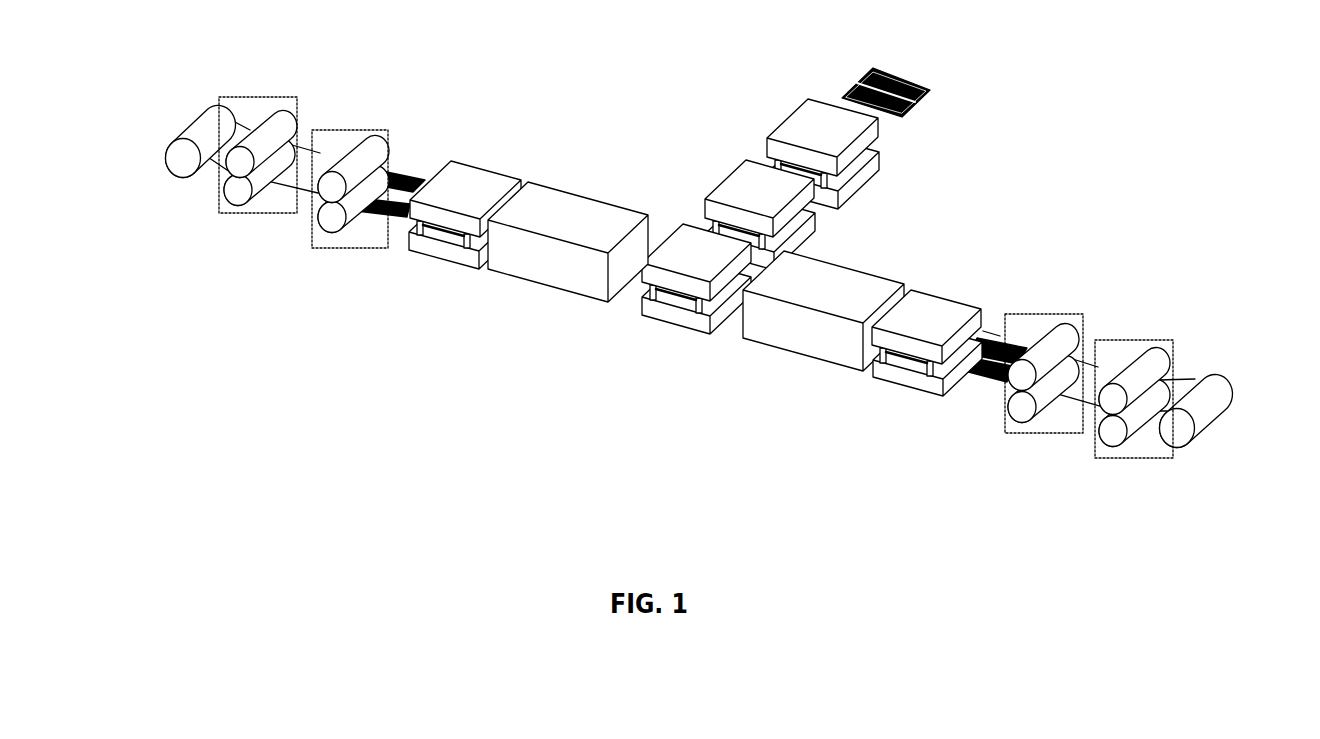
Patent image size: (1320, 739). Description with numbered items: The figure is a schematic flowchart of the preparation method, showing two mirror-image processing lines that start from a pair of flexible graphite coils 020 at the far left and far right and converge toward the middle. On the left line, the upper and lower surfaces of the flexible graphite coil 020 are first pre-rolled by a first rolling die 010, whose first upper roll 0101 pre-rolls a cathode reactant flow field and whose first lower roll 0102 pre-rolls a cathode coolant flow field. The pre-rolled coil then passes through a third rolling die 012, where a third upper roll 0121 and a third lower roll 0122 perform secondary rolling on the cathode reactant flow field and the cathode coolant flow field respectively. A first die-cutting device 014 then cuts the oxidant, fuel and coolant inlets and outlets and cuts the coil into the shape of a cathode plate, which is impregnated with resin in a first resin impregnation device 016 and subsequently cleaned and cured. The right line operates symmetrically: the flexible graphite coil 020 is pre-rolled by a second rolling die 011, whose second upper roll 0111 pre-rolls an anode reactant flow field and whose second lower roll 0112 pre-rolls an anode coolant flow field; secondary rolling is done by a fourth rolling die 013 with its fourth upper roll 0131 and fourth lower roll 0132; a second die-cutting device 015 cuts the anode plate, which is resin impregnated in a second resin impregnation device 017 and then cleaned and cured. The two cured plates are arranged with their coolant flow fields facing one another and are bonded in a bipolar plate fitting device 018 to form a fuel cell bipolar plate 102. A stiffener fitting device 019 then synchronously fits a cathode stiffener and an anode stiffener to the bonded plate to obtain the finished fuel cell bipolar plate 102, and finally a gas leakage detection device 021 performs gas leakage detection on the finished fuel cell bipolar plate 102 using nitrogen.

The first rolling die 010 is at (228, 163).
The first upper roll 0101 is at (247, 127).
The first lower roll 0102 is at (228, 215).
The second rolling die 011 is at (1119, 402).
The second upper roll 0111 is at (1113, 370).
The second lower roll 0112 is at (1125, 425).
The third rolling die 012 is at (342, 188).
The third upper roll 0121 is at (327, 165).
The third lower roll 0122 is at (352, 221).
The fourth rolling die 013 is at (1028, 376).
The fourth upper roll 0131 is at (1027, 350).
The fourth lower roll 0132 is at (1045, 400).
The first die-cutting device 014 is at (442, 258).
The second die-cutting device 015 is at (905, 385).
The first resin impregnation device 016 is at (560, 286).
The second resin impregnation device 017 is at (803, 358).
The bipolar plate fitting device 018 is at (678, 320).
The stiffener fitting device 019 is at (727, 180).
The flexible graphite coil 020 is at (199, 116).
The gas leakage detection device 021 is at (787, 118).
The fuel cell bipolar plate 102 is at (847, 83).